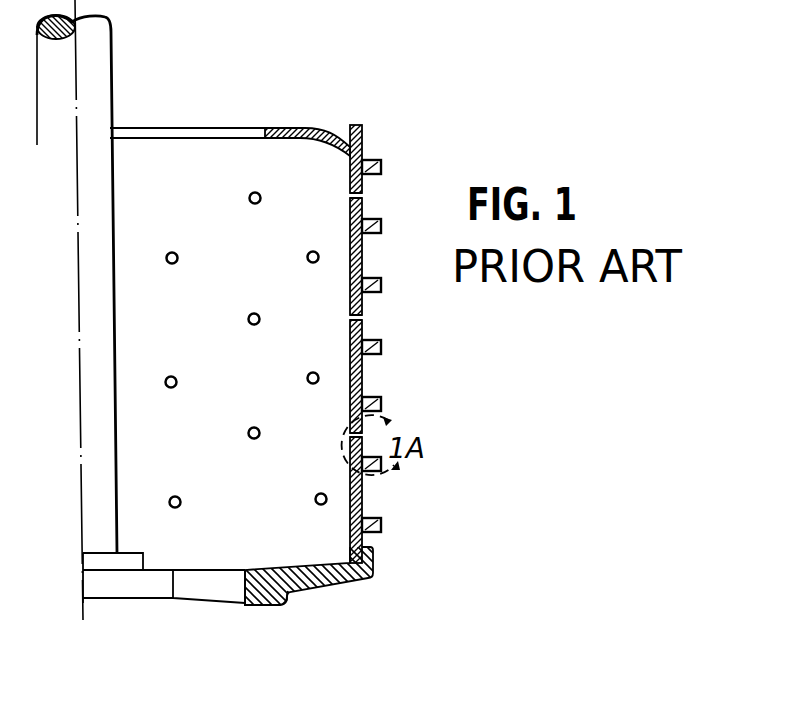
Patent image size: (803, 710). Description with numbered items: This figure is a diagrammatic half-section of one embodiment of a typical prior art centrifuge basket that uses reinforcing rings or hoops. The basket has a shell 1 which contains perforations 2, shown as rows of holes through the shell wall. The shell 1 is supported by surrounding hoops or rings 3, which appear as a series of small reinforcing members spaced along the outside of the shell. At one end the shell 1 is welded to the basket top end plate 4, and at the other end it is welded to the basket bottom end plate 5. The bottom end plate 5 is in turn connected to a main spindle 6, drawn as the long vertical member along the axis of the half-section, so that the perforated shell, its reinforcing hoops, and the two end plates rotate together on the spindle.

The shell 1 is at (365, 263).
The perforations 2 is at (249, 198).
The hoops or rings 3 is at (382, 348).
The basket top end plate 4 is at (320, 125).
The basket bottom end plate 5 is at (262, 605).
The main spindle 6 is at (93, 370).